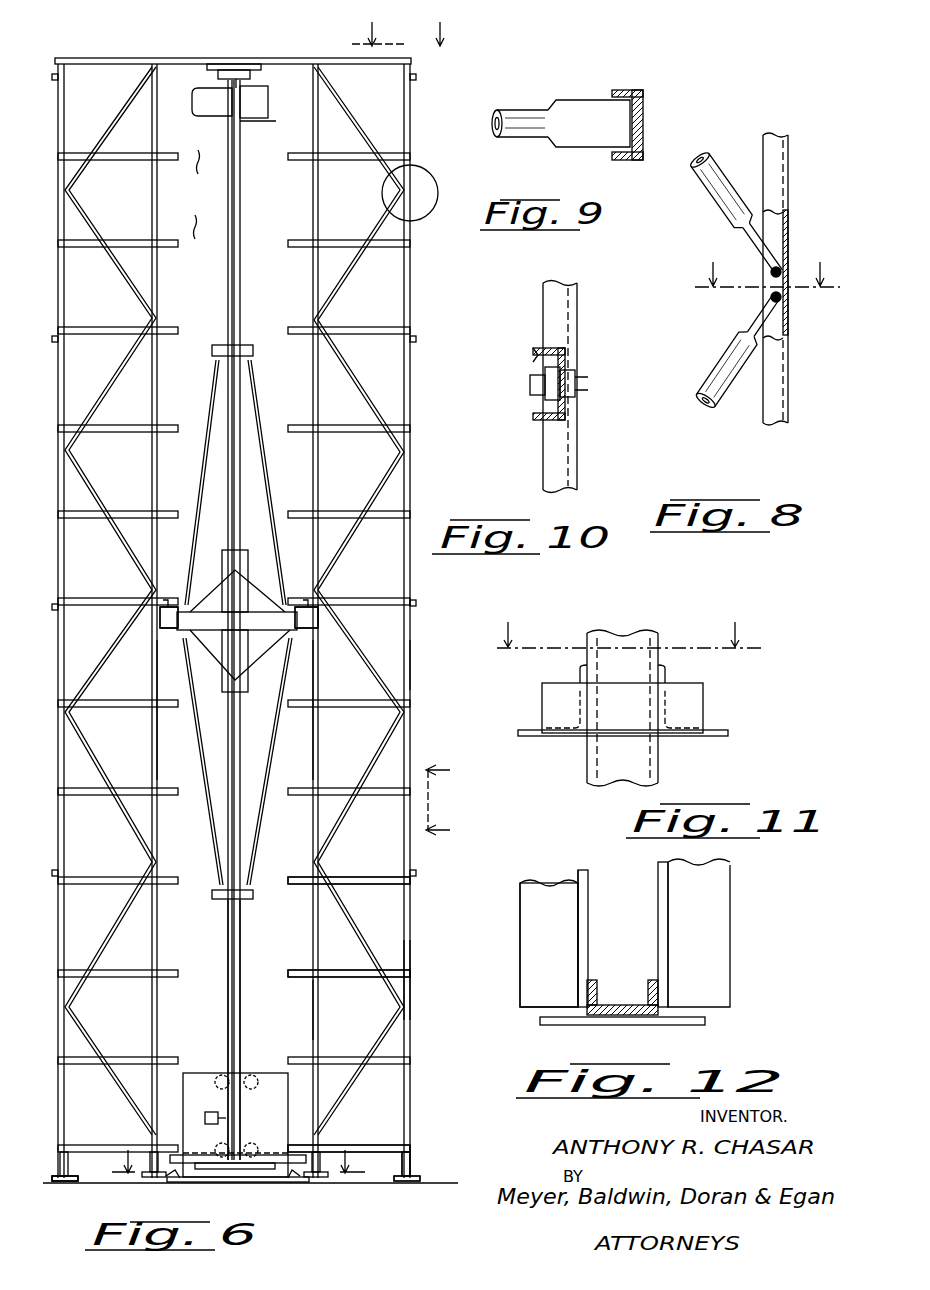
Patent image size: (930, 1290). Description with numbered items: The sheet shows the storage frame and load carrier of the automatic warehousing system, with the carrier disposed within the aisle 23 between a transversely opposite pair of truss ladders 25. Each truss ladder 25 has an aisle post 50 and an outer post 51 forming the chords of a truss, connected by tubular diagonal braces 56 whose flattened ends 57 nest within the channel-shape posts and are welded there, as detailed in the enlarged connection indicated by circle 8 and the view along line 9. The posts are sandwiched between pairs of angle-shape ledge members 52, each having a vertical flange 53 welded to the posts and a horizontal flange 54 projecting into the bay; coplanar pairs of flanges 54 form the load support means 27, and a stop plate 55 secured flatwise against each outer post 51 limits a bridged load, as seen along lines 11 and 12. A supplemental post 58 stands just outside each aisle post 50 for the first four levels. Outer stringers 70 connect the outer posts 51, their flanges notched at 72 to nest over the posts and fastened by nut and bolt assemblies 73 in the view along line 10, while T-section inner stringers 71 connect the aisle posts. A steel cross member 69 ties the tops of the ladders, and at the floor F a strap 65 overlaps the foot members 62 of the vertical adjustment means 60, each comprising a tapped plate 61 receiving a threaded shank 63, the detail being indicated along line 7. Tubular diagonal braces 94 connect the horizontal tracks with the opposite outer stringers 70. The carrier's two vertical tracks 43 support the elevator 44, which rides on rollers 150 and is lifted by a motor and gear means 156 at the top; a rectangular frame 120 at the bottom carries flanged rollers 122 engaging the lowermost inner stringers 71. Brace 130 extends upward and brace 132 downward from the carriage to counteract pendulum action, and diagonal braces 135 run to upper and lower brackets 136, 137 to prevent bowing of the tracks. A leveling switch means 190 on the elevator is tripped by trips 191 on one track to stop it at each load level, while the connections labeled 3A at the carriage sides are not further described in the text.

In FIG. 6, the cross member 69 is at (95, 58).
In FIG. 6, the section line 10— 10 is at (396, 33).
In FIG. 6, the outer stringers 70 is at (410, 80).
In FIG. 10, the outer stringers 70 is at (543, 452).
In FIG. 6, the inner stringers 71 is at (312, 78).
In FIG. 6, the diagonal braces 56 is at (358, 128).
In FIG. 9, the diagonal braces 56 is at (512, 110).
In FIG. 8, the diagonal braces 56 is at (740, 368).
In FIG. 6, the load support means 27 is at (340, 788).
In FIG. 6, the ledge members 52 is at (358, 877).
In FIG. 12, the ledge members 52 is at (545, 900).
In FIG. 6, the flanged rollers 122 is at (300, 1150).
In FIG. 6, the brace 130 is at (241, 210).
In FIG. 6, the brace 132 is at (242, 932).
In FIG. 6, the vertical tracks 43 is at (226, 272).
In FIG. 6, the trips 191 is at (227, 280).
In FIG. 6, the aisle 23 is at (194, 194).
In FIG. 6, the motor and gear means 156 is at (210, 118).
In FIG. 6, the upper bracket 136 is at (246, 345).
In FIG. 6, the lower bracket 137 is at (215, 899).
In FIG. 6, the diagonal braces 135 is at (255, 432).
In FIG. 6, the diagonal braces 94 is at (105, 605).
In FIG. 6, the side bracket 3A is at (168, 635).
In FIG. 6, the aisle post 50 is at (157, 726).
In FIG. 6, the truss ladder 25 is at (411, 662).
In FIG. 6, the outer post 51 is at (411, 982).
In FIG. 9, the outer post 51 is at (645, 114).
In FIG. 8, the outer post 51 is at (790, 184).
In FIG. 10, the outer post 51 is at (533, 416).
In FIG. 11, the outer post 51 is at (640, 633).
In FIG. 12, the outer post 51 is at (618, 1003).
In FIG. 6, the supplemental post 58 is at (325, 1008).
In FIG. 6, the section line 11— 11 is at (453, 803).
In FIG. 6, the circle 8 is at (430, 215).
In FIG. 6, the elevator 44 is at (282, 1116).
In FIG. 6, the rollers 150 is at (220, 1075).
In FIG. 6, the leveling switch means 190 is at (205, 1108).
In FIG. 6, the rectangular frame 120 is at (192, 1155).
In FIG. 6, the strap 65 is at (240, 1183).
In FIG. 6, the tapped plate 61 is at (60, 1160).
In FIG. 6, the threaded shank 63 is at (58, 1175).
In FIG. 6, the foot member 62 is at (70, 1184).
In FIG. 6, the vertical adjustment means 60 is at (434, 1176).
In FIG. 6, the floor F is at (445, 1183).
In FIG. 6, the section line 7— 7 is at (234, 1165).
In FIG. 9, the flattened ends 57 is at (574, 100).
In FIG. 8, the flattened ends 57 is at (766, 300).
In FIG. 8, the section line 9— 9 is at (767, 293).
In FIG. 10, the notches 72 is at (535, 354).
In FIG. 10, the nut and bolt assemblies 73 is at (590, 380).
In FIG. 11, the stop plate 55 is at (700, 696).
In FIG. 12, the stop plate 55 is at (630, 1026).
In FIG. 11, the horizontal flange 54 is at (526, 730).
In FIG. 12, the horizontal flange 54 is at (522, 912).
In FIG. 11, the section line 12— 12 is at (624, 621).
In FIG. 12, the vertical flange 53 is at (578, 960).